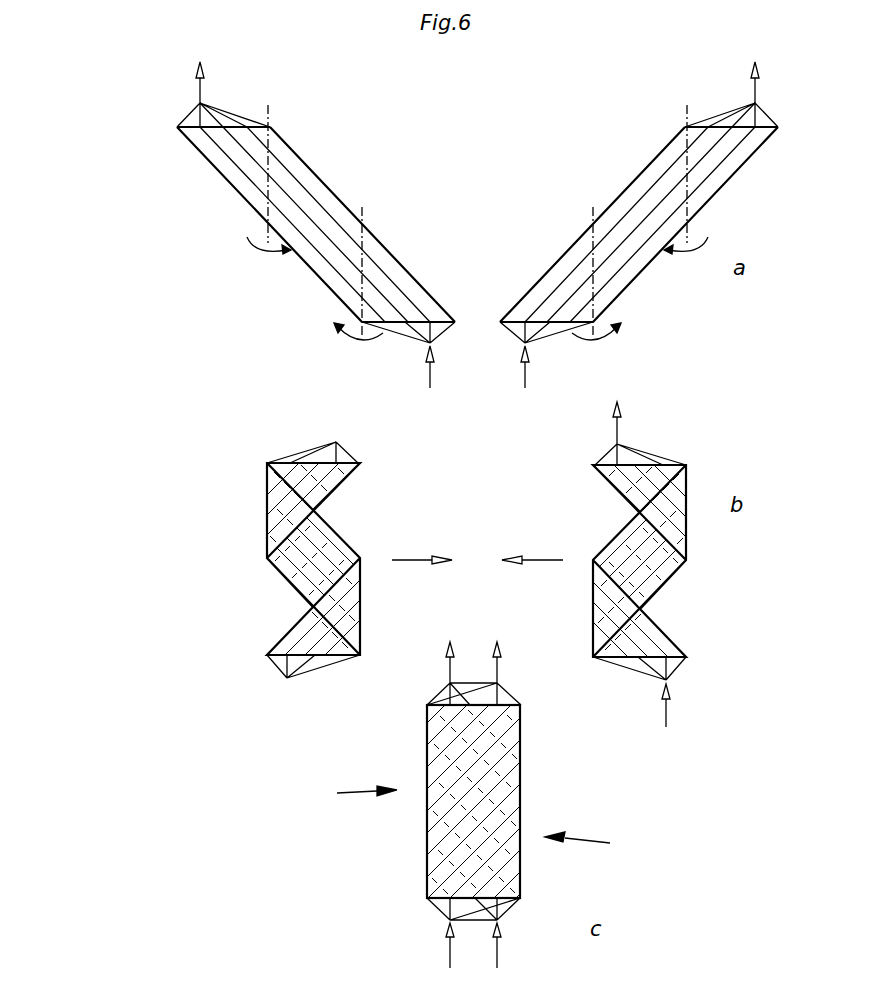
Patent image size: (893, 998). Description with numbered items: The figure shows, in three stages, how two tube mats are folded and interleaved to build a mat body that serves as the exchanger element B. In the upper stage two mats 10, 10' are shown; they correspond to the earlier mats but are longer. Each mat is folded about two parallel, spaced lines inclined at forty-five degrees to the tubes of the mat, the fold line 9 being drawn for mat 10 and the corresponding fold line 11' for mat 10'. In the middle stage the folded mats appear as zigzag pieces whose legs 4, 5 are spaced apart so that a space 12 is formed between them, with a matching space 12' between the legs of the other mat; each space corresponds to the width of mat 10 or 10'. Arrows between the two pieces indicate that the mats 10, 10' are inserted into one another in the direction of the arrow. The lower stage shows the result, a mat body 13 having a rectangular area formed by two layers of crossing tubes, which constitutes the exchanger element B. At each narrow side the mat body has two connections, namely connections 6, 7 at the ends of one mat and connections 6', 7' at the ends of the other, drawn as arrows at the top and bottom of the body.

The leg 4 is at (345, 476).
The leg 5 is at (300, 633).
The connection 6 is at (416, 657).
The connection 6' is at (533, 657).
The connection 7 is at (347, 372).
The connection 7' is at (601, 372).
The fold line 9 is at (255, 162).
The mat 10 is at (316, 223).
The mat 10' is at (639, 223).
The fold line 11' is at (639, 272).
The space 12 is at (341, 559).
The space 12' is at (579, 650).
The mat body 13 is at (353, 792).
The exchanger element B is at (586, 846).